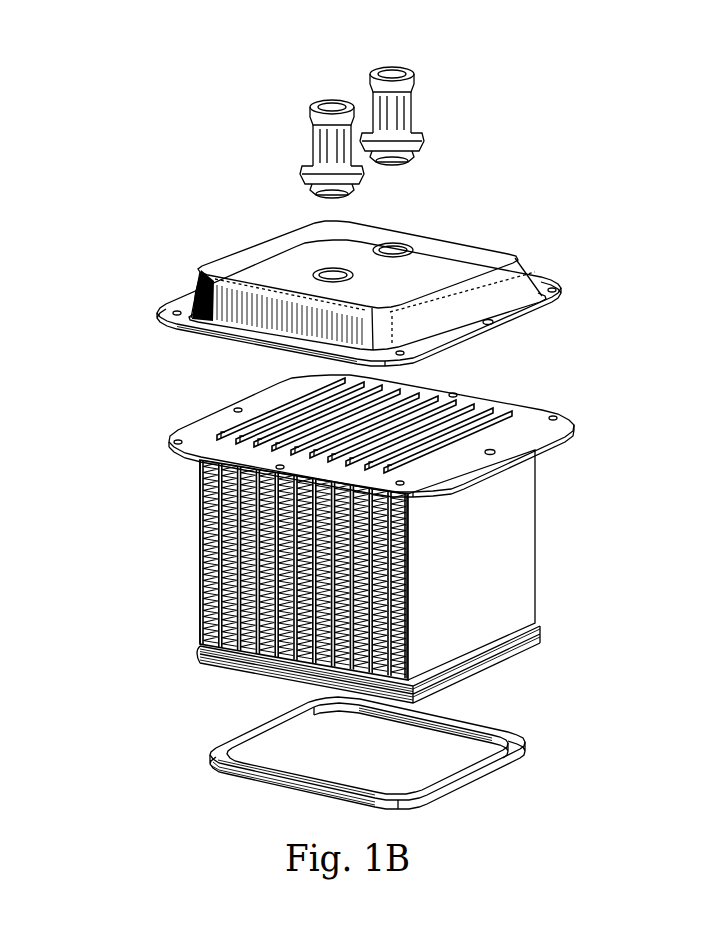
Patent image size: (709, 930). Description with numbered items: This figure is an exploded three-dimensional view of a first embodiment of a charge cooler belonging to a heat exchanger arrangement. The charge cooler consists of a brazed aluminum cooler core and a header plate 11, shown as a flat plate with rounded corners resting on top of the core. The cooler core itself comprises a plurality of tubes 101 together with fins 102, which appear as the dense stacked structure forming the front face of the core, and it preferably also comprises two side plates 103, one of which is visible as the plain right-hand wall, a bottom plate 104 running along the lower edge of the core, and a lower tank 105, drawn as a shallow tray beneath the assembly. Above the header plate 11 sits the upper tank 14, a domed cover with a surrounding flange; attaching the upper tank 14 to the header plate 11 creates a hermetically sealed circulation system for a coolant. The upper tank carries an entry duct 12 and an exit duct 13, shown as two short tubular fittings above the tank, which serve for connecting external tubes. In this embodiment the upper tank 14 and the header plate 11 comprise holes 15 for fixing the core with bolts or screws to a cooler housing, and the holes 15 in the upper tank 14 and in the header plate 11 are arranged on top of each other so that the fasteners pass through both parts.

The header plate 11 is at (202, 432).
The entry duct 12 is at (307, 117).
The exit duct 13 is at (417, 103).
The upper tank 14 is at (478, 253).
The holes 15 is at (492, 452).
The tubes 101 is at (217, 515).
The fins 102 is at (207, 597).
The side plates 103 is at (505, 583).
The bottom plate 104 is at (207, 665).
The lower tank 105 is at (527, 733).